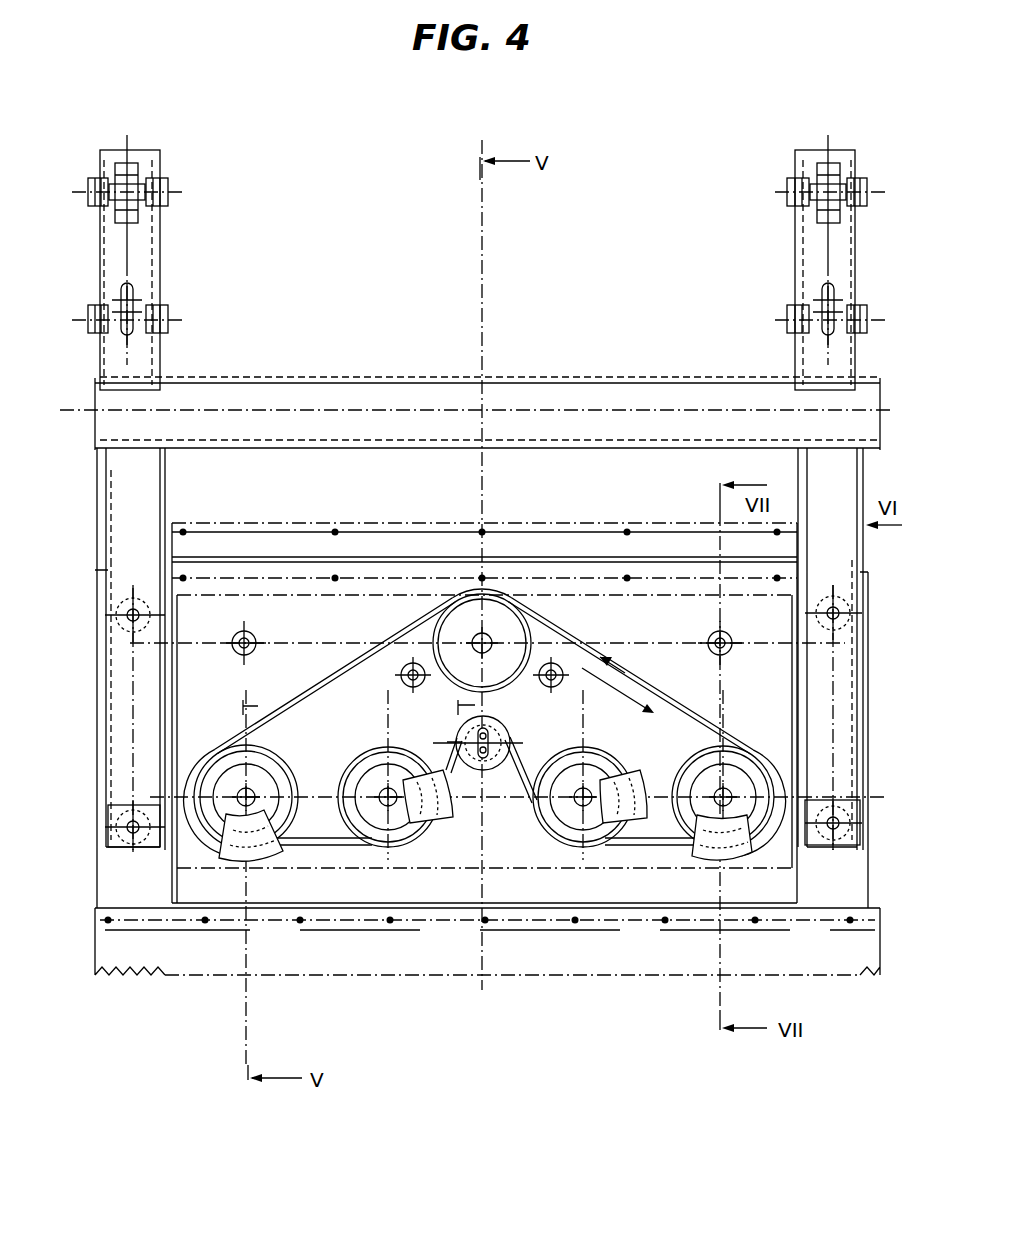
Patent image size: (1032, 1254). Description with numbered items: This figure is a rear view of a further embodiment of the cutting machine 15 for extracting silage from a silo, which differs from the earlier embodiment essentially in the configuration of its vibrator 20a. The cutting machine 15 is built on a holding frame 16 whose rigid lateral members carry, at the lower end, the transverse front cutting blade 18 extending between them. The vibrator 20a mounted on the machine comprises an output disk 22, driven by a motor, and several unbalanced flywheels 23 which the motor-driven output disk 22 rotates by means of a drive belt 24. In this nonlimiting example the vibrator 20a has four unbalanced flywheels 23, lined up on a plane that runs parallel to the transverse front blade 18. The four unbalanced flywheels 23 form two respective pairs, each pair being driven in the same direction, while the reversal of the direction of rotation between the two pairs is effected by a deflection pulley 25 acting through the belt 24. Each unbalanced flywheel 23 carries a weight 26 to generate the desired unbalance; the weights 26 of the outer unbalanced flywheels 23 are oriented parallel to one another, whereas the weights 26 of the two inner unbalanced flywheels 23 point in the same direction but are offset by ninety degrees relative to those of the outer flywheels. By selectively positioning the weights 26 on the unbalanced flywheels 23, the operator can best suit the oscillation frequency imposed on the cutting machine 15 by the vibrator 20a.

The cutting machine 15 is at (93, 490).
The holding frame 16 is at (117, 506).
The transverse front cutting blade 18 is at (389, 955).
The vibrator 20a is at (553, 624).
The output disk 22 is at (458, 627).
The unbalanced flywheels 23 is at (377, 782).
The drive belt 24 is at (305, 693).
The deflection pulley 25 is at (470, 768).
The weight 26 is at (645, 825).